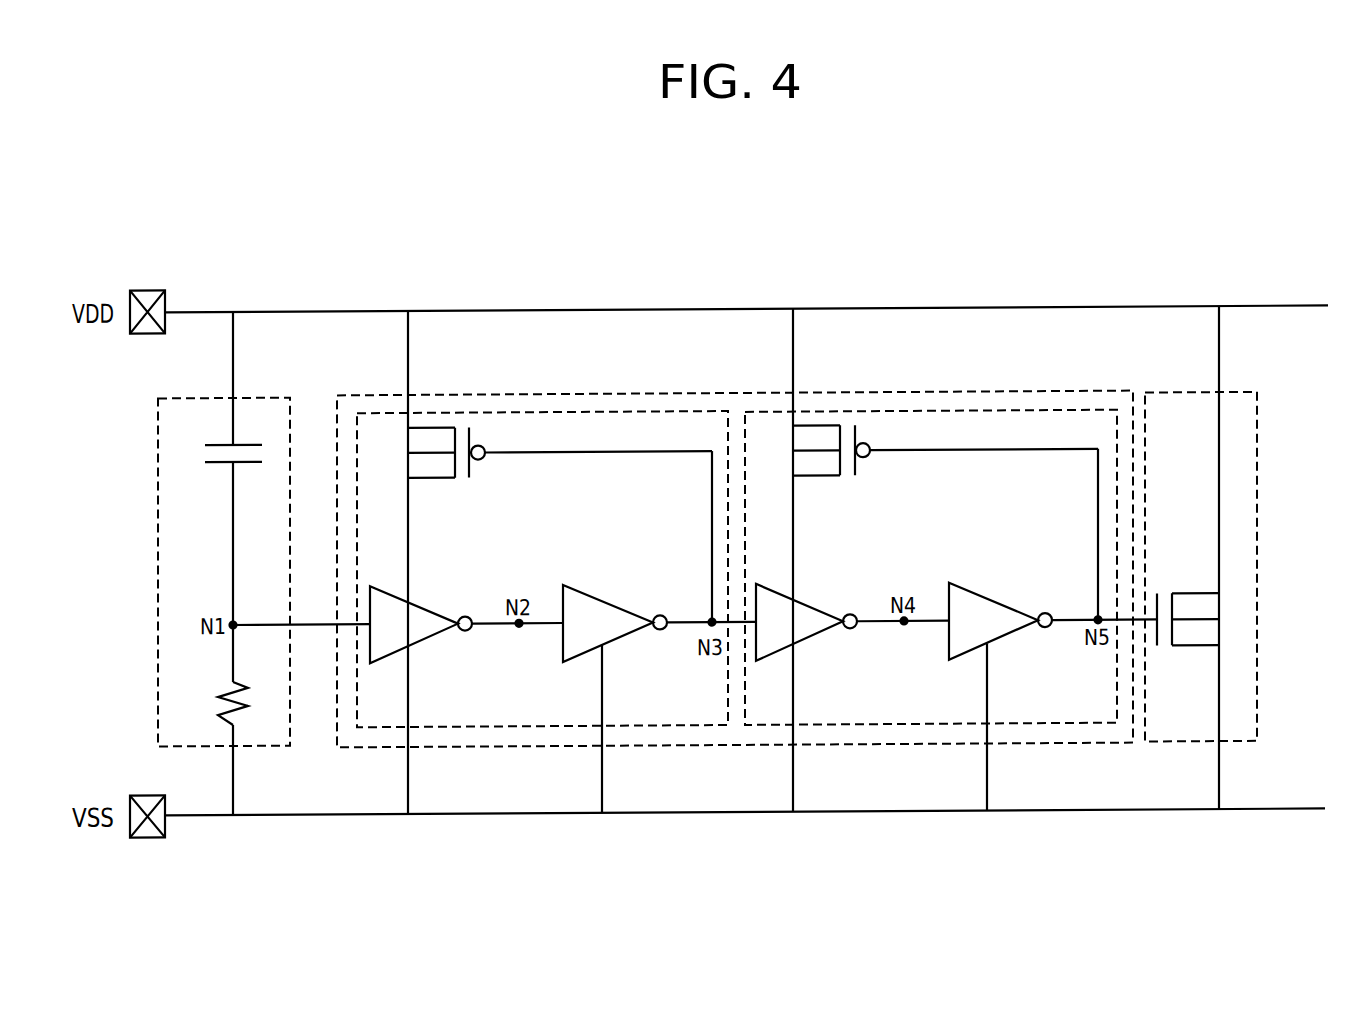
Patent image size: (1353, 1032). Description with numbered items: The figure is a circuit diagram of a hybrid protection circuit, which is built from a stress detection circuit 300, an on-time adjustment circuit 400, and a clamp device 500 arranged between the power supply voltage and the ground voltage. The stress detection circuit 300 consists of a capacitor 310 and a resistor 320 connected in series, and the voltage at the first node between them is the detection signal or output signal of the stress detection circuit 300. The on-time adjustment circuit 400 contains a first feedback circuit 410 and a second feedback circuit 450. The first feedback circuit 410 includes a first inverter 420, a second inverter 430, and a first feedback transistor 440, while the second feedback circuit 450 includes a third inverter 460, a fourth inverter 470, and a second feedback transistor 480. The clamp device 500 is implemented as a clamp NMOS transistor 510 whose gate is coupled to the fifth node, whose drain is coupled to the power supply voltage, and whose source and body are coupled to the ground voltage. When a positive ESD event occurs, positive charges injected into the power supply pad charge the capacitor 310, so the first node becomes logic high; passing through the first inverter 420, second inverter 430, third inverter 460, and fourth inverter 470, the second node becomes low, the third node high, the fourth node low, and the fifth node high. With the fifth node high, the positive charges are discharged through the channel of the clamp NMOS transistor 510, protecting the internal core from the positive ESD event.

The stress detection circuit 300 is at (263, 397).
The capacitor 310 is at (215, 463).
The resistor 320 is at (232, 690).
The on-time adjustment circuit 400 is at (692, 397).
The first feedback circuit 410 is at (540, 414).
The first inverter 420 is at (425, 641).
The second inverter 430 is at (606, 603).
The first feedback transistor 440 is at (435, 480).
The second feedback circuit 450 is at (932, 416).
The third inverter 460 is at (810, 642).
The fourth inverter 470 is at (997, 604).
The second feedback transistor 480 is at (820, 480).
The clamp device 500 is at (1185, 399).
The clamp NMOS transistor 510 is at (1195, 652).